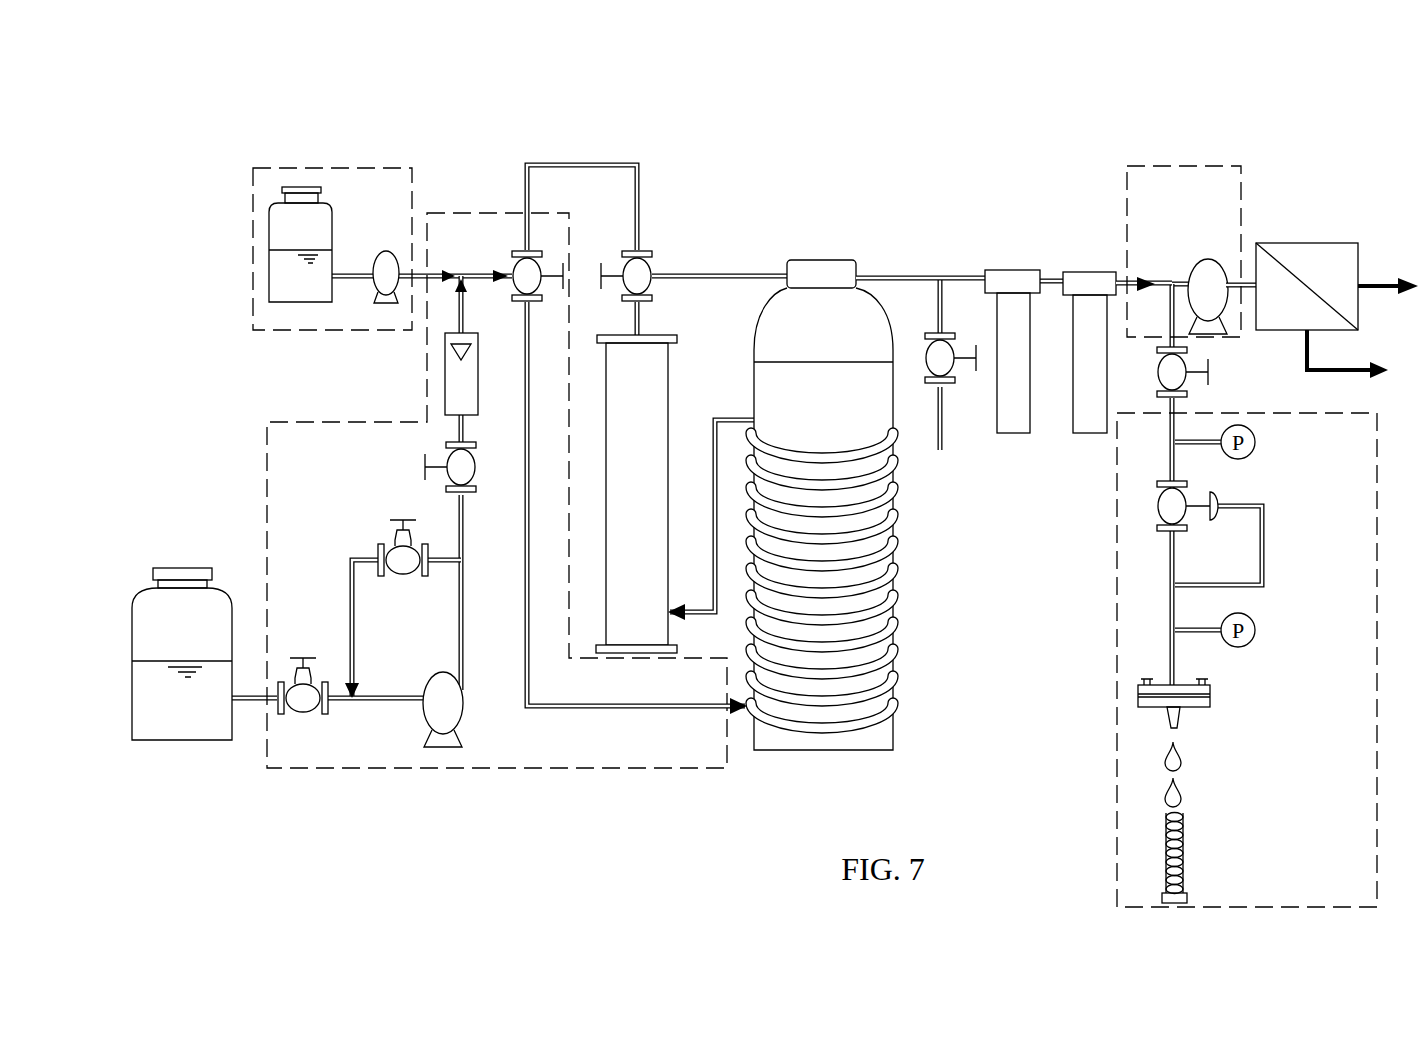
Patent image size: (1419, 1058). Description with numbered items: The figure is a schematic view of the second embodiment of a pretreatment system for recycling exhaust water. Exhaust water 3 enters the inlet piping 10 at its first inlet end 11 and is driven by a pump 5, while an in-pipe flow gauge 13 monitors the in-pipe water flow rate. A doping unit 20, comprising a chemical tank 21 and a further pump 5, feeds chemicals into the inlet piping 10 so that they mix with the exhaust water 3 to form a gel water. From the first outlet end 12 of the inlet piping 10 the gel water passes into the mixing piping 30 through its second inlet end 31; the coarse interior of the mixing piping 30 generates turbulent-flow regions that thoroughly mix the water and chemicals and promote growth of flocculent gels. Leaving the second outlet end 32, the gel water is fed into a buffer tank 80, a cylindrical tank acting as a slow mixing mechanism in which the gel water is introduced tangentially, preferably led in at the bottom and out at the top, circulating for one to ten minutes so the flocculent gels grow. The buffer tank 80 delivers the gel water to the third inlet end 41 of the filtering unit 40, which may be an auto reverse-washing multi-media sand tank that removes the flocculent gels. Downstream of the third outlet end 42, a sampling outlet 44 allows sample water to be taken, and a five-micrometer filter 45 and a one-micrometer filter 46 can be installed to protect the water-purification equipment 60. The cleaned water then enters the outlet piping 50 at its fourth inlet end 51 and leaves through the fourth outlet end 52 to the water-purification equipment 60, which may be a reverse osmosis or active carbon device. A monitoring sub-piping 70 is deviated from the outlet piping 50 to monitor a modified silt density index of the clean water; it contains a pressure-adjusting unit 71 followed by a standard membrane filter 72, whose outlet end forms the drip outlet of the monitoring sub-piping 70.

The exhaust water 3 is at (215, 592).
The pump 5 is at (384, 253).
The inlet piping 10 is at (350, 755).
The first inlet end 11 is at (268, 705).
The first outlet end 12 is at (727, 712).
The in-pipe flow gauge 13 is at (445, 380).
The doping unit 20 is at (341, 185).
The chemical tank 21 is at (287, 280).
The mixing piping 30 is at (895, 607).
The second inlet end 31 is at (756, 722).
The second outlet end 32 is at (757, 425).
The filtering unit 40 is at (822, 315).
The third inlet end 41 is at (785, 273).
The third outlet end 42 is at (858, 268).
The sampling outlet 44 is at (940, 450).
The 5-μm filter 45 is at (1013, 435).
The 1-μm filter 46 is at (1083, 435).
The outlet piping 50 is at (1145, 178).
The fourth inlet end 51 is at (1125, 276).
The fourth outlet end 52 is at (1245, 286).
The water-purification equipment 60 is at (1323, 262).
The monitoring sub-piping 70 is at (1130, 778).
The pressure-adjusting unit 71 is at (1262, 542).
The standard membrane filter 72 is at (1210, 700).
The buffer tank 80 is at (657, 385).